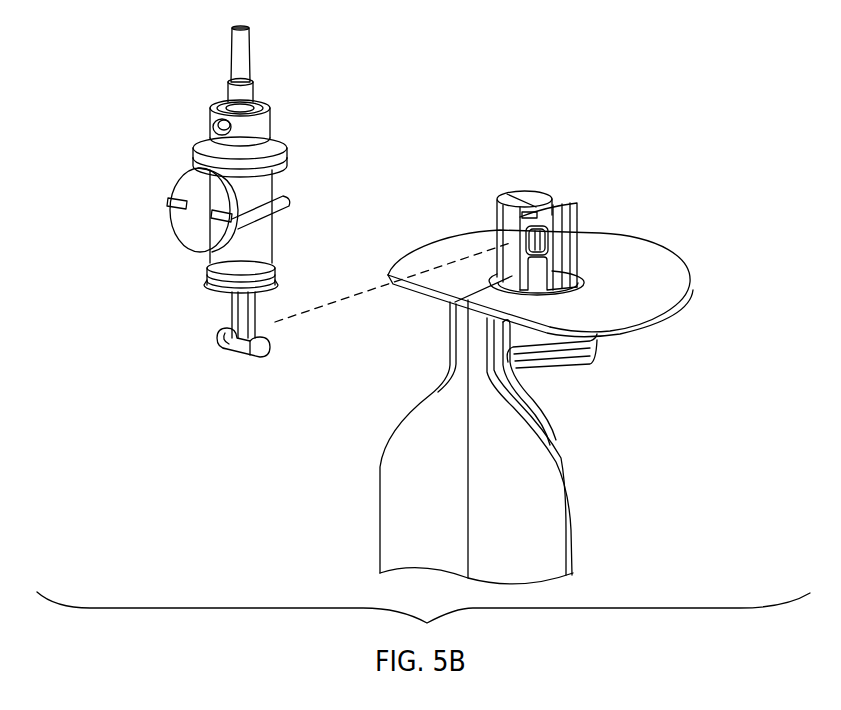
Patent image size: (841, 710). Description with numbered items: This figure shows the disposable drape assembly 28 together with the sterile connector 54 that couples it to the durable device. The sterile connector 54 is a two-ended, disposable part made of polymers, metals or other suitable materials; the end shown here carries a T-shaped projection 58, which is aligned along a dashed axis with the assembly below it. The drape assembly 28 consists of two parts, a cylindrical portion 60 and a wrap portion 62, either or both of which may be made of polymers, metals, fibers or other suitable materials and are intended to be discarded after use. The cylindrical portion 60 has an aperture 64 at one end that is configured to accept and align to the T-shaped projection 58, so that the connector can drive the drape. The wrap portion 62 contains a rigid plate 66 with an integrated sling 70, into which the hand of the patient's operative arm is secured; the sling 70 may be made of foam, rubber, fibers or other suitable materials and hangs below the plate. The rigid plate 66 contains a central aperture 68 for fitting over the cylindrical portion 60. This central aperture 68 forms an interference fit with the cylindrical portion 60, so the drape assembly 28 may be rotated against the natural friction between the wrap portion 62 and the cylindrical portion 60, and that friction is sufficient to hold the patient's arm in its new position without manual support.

The disposable drape assembly 28 is at (227, 540).
The sterile connector 54 is at (275, 275).
The T-shaped projection 58 is at (243, 357).
The cylindrical portion 60 is at (531, 197).
The wrap portion 62 is at (549, 364).
The aperture 64 is at (550, 243).
The rigid plate 66 is at (667, 271).
The central aperture 68 is at (572, 316).
The sling 70 is at (378, 520).